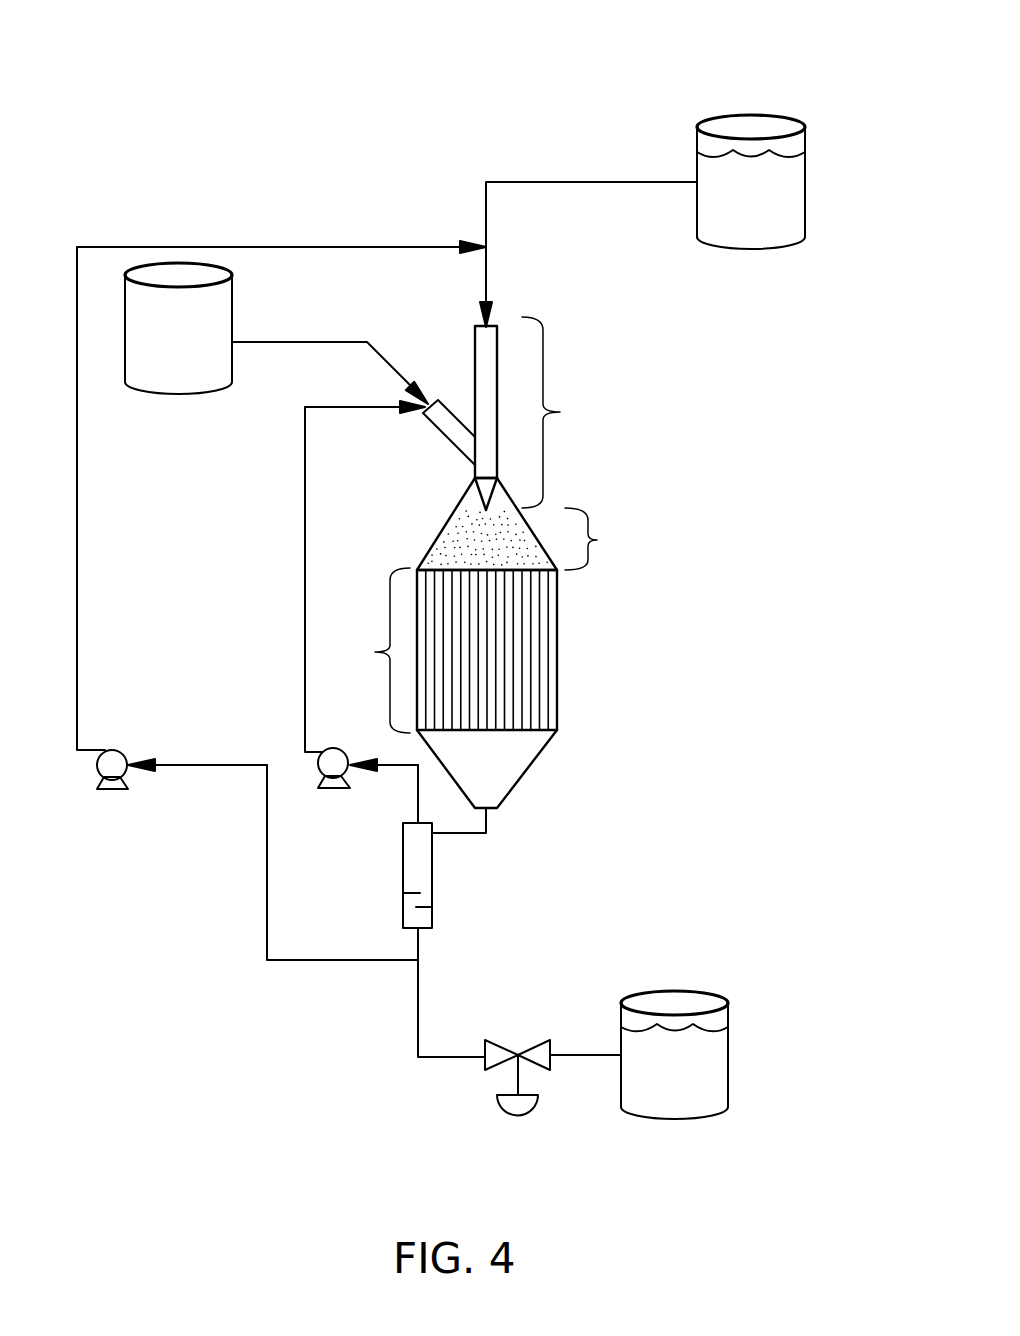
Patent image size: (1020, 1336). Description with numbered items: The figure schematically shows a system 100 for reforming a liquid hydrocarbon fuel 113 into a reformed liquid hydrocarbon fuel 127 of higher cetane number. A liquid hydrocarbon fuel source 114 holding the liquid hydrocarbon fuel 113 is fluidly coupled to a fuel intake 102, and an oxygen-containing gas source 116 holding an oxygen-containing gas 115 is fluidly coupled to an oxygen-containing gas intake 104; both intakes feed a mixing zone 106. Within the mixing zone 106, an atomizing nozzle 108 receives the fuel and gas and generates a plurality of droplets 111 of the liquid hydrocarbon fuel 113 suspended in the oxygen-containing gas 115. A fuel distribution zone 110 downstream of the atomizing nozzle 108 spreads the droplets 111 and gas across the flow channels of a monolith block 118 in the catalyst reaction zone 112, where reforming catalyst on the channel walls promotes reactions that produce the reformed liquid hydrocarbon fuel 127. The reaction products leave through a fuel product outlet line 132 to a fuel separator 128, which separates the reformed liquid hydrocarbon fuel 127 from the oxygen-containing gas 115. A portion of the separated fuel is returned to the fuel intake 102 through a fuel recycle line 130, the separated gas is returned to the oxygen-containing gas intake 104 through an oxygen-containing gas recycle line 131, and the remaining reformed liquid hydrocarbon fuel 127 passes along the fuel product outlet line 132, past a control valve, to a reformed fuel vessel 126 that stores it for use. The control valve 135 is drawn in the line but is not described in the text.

The system 100 is at (204, 69).
The fuel intake 102 is at (486, 272).
The oxygen-containing gas intake 104 is at (438, 430).
The mixing zone 106 is at (546, 412).
The atomizing nozzle 108 is at (481, 490).
The fuel distribution zone 110 is at (525, 524).
The droplets 111 is at (442, 531).
The catalyst reaction zone 112 is at (478, 650).
The liquid hydrocarbon fuel 113 is at (794, 172).
The liquid hydrocarbon fuel source 114 is at (805, 214).
The oxygen-containing gas 115 is at (175, 382).
The oxygen-containing gas source 116 is at (232, 312).
The monolith block 118 is at (552, 650).
The reformed fuel vessel 126 is at (728, 1055).
The reformed liquid hydrocarbon fuel 127 is at (467, 833).
The fuel separator 128 is at (403, 855).
The fuel recycle line 130 is at (279, 247).
The oxygen-containing gas recycle line 131 is at (305, 578).
The fuel product outlet line 132 is at (417, 1008).
The valve 135 is at (517, 1073).